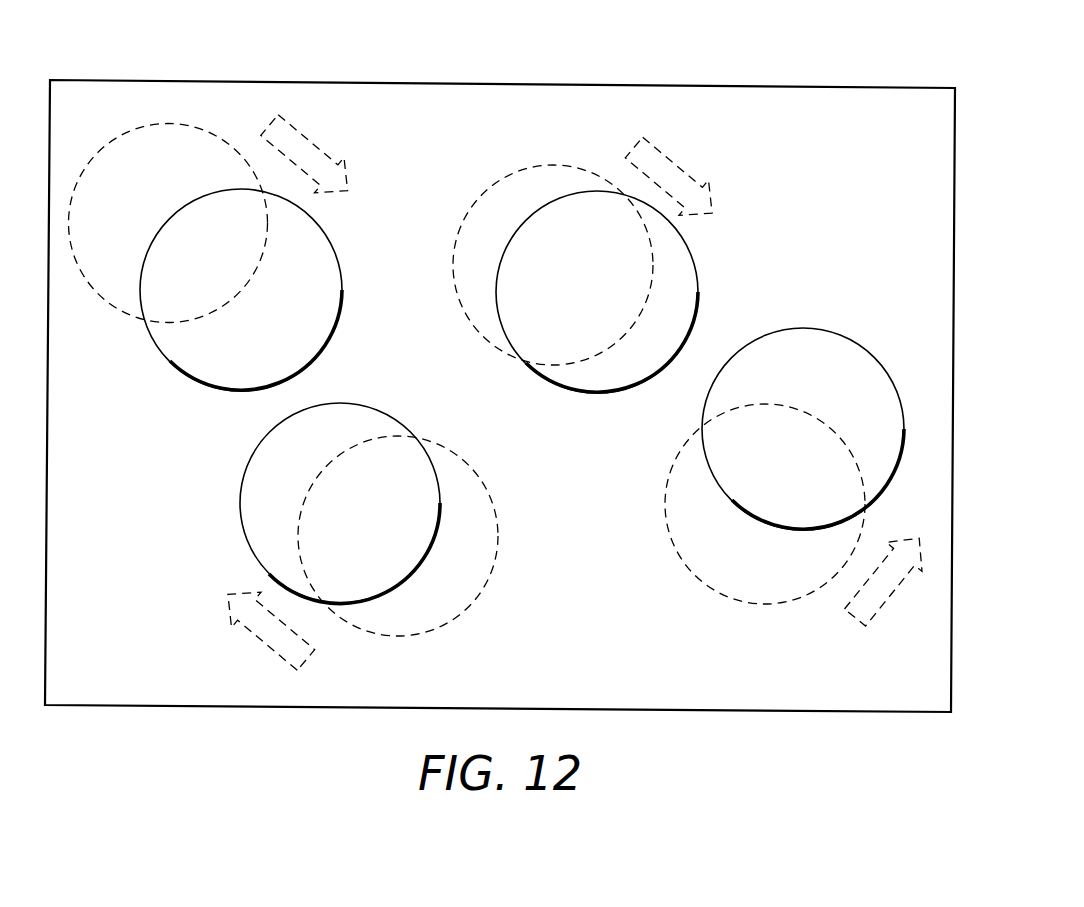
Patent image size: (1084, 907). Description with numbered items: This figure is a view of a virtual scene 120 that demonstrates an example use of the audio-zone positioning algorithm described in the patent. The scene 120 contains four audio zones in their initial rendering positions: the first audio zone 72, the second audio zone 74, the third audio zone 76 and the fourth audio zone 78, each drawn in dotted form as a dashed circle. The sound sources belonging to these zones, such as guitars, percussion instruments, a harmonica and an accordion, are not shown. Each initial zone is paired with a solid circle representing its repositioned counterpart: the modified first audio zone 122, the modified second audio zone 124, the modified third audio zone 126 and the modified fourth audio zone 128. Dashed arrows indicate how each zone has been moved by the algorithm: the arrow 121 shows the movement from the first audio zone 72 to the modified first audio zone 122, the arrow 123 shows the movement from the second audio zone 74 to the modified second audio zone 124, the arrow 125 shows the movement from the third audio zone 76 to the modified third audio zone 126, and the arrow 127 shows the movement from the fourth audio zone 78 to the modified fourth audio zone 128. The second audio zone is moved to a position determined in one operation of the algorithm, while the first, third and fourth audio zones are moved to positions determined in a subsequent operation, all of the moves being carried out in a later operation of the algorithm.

The virtual scene 120 is at (899, 70).
The first audio zone 72 is at (168, 204).
The second audio zone 74 is at (498, 515).
The third audio zone 76 is at (553, 240).
The fourth audio zone 78 is at (743, 509).
The modified first audio zone 122 is at (338, 314).
The modified second audio zone 124 is at (248, 467).
The modified third audio zone 126 is at (698, 265).
The modified fourth audio zone 128 is at (838, 331).
The arrow 121 is at (319, 143).
The arrow 123 is at (232, 631).
The arrow 125 is at (685, 165).
The arrow 127 is at (894, 601).